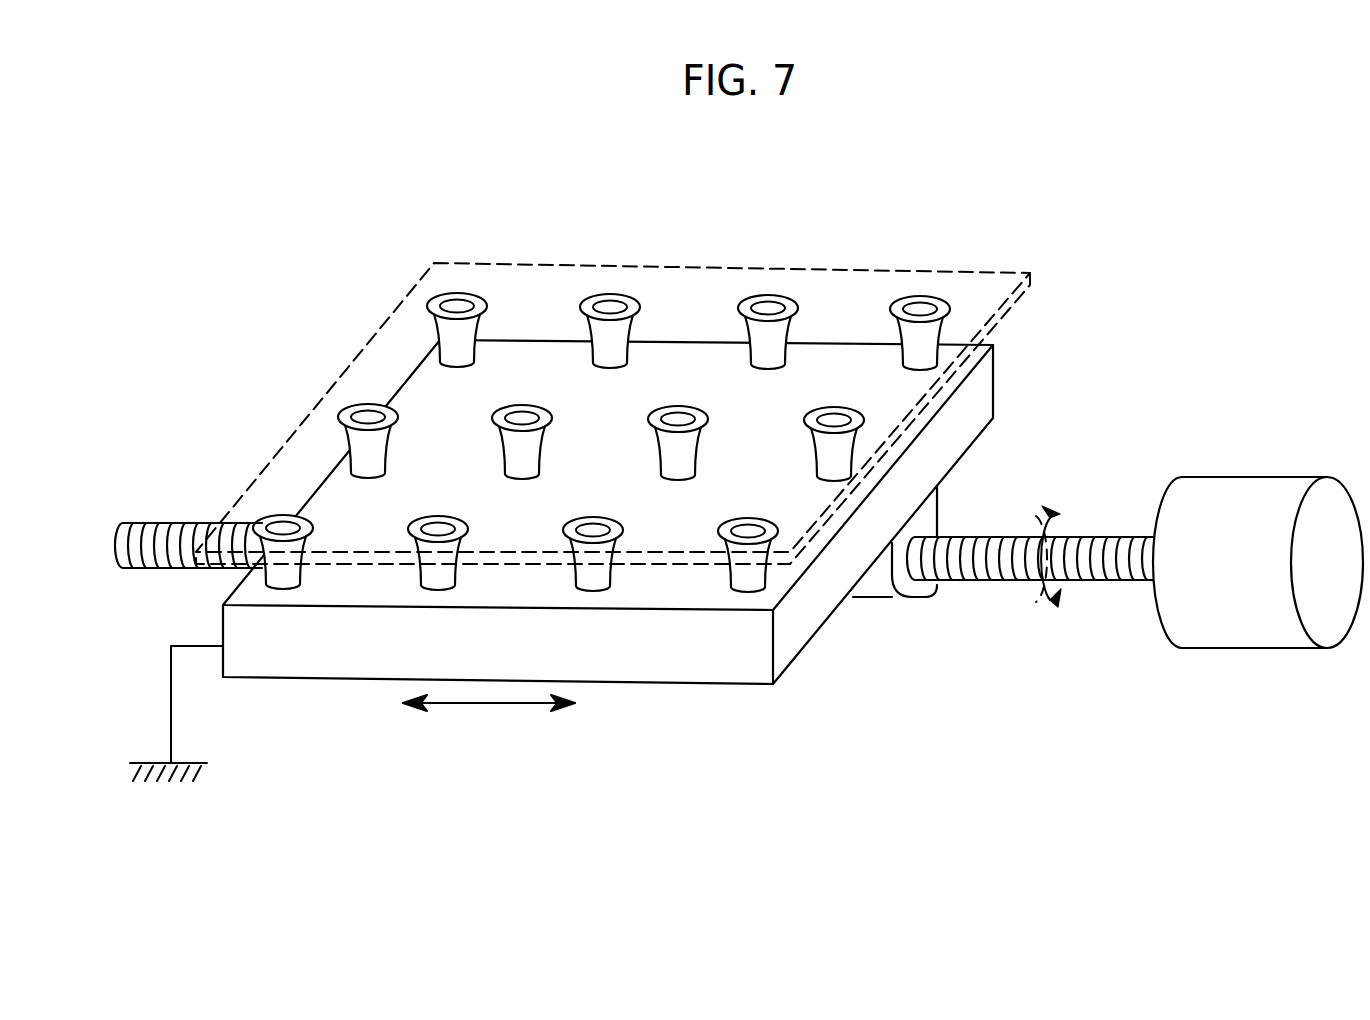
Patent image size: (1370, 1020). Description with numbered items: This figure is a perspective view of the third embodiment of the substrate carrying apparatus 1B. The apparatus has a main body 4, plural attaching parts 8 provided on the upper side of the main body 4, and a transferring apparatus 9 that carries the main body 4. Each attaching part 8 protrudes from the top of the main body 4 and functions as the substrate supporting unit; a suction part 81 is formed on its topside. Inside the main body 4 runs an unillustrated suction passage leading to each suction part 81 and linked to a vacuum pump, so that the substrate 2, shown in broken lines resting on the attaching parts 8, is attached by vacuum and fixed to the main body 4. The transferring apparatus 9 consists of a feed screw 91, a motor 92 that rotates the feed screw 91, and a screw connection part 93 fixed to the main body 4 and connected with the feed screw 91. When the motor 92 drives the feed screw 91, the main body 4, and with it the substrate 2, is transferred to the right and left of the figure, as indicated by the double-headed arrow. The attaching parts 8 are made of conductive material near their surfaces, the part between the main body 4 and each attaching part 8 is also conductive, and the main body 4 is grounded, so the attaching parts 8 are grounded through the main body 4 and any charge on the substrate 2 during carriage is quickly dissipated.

The substrate carrying apparatus 1B is at (739, 515).
The substrate 2 is at (893, 267).
The main body 4 is at (345, 650).
The attaching part 8 is at (588, 302).
The suction part 81 is at (613, 304).
The transferring apparatus 9 is at (739, 562).
The feed screw 91 is at (970, 575).
The motor 92 is at (1228, 620).
The screw connection part 93 is at (873, 585).